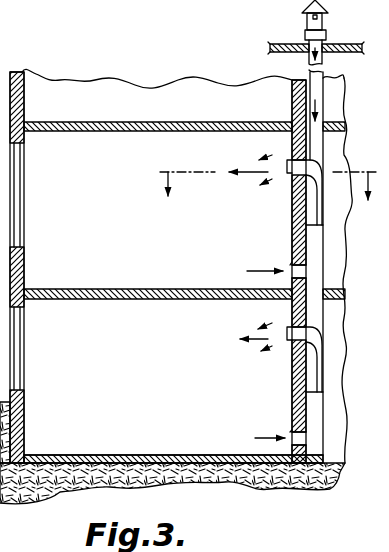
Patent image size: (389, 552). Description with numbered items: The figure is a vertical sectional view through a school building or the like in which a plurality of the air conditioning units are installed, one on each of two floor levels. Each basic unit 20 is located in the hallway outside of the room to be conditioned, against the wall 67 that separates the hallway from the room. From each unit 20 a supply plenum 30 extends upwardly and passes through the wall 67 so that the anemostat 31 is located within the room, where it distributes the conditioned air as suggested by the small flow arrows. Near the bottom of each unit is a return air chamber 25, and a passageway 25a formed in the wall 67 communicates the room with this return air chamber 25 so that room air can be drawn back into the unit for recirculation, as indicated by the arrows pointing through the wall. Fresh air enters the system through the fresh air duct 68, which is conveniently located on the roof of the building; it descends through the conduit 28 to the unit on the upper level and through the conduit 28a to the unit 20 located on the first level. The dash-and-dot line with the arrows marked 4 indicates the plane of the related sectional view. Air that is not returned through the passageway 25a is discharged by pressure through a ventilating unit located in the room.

The section line 4- 4 is at (269, 200).
The basic unit 20 is at (324, 248).
The return air chamber 25 is at (325, 268).
The passageway 25a is at (292, 262).
The fresh air conduit 28 is at (343, 157).
The conduit 28a is at (345, 327).
The supply plenum 30 is at (322, 189).
The anemostat 31 is at (288, 170).
The wall 67 is at (292, 213).
The fresh air duct 68 is at (305, 35).